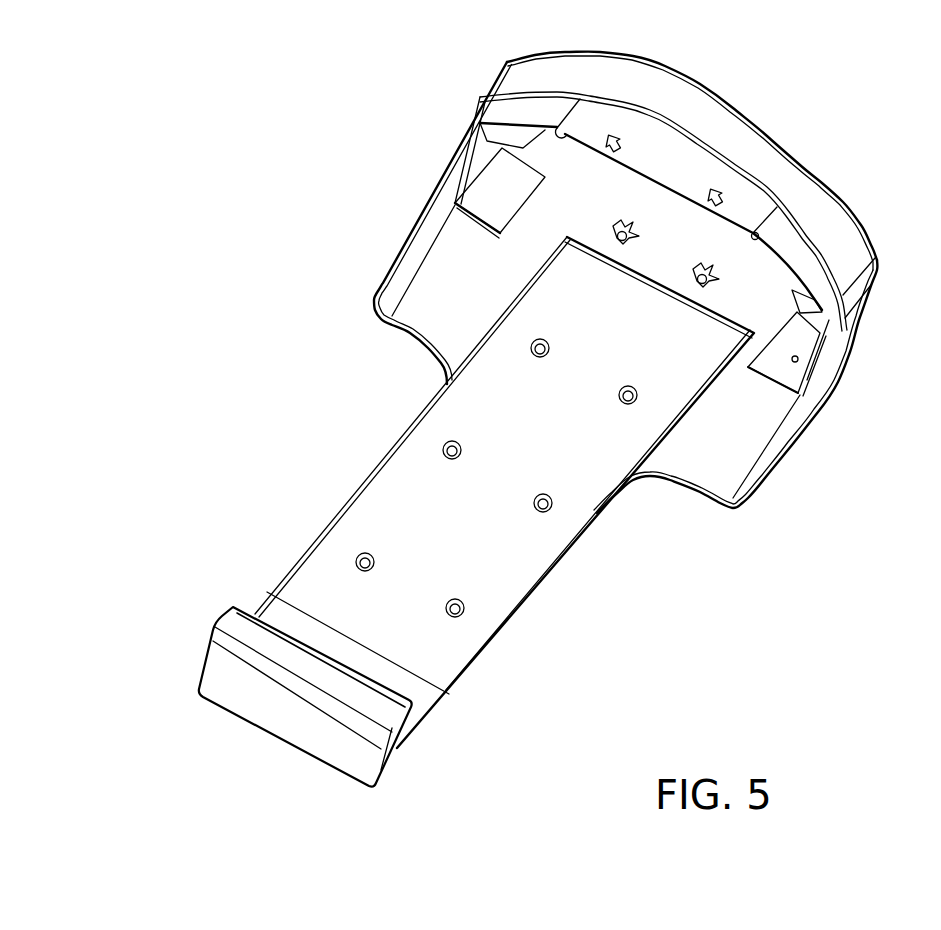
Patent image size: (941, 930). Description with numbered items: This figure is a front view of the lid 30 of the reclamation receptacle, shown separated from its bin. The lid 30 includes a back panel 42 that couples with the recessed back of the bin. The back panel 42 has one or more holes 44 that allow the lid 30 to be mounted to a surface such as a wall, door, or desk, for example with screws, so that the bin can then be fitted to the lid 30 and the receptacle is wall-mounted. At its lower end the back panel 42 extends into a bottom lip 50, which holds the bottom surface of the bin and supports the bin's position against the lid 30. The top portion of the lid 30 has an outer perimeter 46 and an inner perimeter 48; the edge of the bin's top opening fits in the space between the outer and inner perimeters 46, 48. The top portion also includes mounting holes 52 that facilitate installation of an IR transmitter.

The lid 30 is at (680, 73).
The back panel 42 is at (530, 557).
The holes 44 is at (443, 443).
The outer perimeter 46 is at (446, 170).
The inner perimeter 48 is at (472, 200).
The bottom lip 50 is at (217, 673).
The mounting holes 52 is at (707, 272).